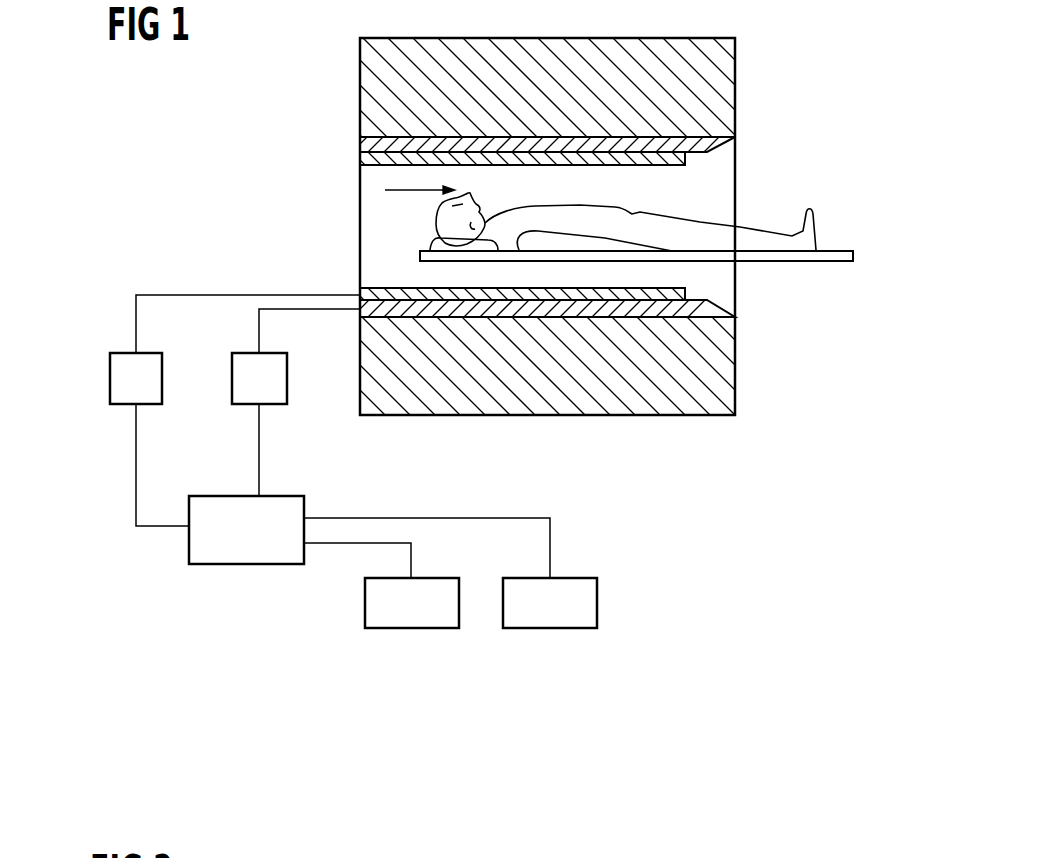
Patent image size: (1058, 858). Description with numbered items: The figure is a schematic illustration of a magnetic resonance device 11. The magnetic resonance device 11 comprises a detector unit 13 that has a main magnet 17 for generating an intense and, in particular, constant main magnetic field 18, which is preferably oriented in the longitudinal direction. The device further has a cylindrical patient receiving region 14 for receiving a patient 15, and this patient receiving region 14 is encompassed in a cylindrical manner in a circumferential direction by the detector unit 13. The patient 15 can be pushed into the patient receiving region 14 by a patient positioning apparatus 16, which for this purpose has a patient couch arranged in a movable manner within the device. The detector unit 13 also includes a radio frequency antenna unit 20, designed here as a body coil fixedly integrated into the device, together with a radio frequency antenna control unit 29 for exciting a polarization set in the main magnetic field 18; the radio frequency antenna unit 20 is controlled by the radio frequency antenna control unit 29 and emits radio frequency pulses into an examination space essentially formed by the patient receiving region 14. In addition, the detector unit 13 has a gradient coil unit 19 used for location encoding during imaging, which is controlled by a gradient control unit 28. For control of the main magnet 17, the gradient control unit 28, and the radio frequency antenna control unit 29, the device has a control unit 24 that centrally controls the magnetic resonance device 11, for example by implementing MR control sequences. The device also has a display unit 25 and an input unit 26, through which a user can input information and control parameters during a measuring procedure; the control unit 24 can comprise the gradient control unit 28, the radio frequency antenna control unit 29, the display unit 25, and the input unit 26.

The magnetic resonance device 11 is at (196, 171).
The detector unit 13 is at (700, 450).
The patient receiving region 14 is at (716, 203).
The patient 15 is at (808, 226).
The patient positioning apparatus 16 is at (853, 254).
The main magnet 17 is at (734, 100).
The main magnetic field 18 is at (385, 190).
The gradient coil unit 19 is at (360, 145).
The radio frequency antenna unit 20 is at (360, 157).
The control unit 24 is at (243, 565).
The display unit 25 is at (411, 629).
The input unit 26 is at (550, 629).
The gradient control unit 28 is at (273, 405).
The radio frequency antenna control unit 29 is at (148, 405).